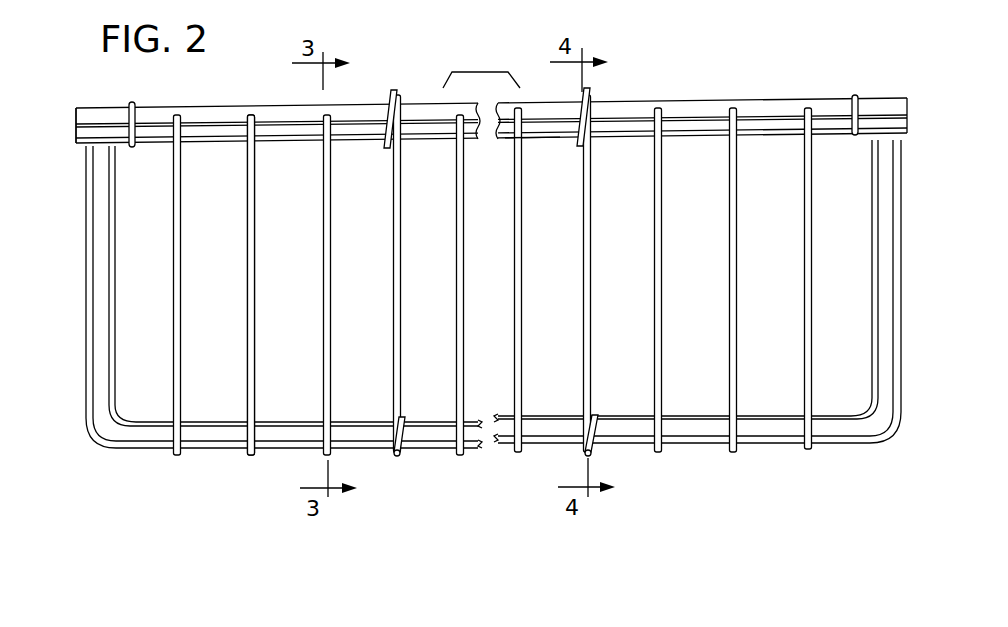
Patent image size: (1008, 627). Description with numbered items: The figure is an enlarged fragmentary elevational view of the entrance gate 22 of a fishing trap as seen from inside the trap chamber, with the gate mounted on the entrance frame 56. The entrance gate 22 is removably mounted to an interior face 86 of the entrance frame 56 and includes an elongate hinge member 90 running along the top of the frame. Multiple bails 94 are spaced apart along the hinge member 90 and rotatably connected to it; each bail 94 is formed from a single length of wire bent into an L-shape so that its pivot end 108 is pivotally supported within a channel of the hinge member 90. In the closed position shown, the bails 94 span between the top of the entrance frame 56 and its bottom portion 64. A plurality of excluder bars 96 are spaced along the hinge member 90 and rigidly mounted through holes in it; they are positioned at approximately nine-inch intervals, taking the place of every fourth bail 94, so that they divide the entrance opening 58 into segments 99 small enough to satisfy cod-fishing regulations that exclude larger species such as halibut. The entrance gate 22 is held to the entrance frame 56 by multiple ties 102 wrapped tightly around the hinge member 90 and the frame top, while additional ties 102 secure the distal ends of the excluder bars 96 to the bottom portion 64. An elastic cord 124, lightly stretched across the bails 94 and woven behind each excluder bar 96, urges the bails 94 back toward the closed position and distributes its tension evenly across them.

The entrance gate 22 is at (748, 95).
The entrance frame 56 is at (882, 178).
The entrance opening 58 is at (860, 384).
The bottom portion 64 is at (700, 434).
The interior face 86 is at (100, 217).
The hinge member 90 is at (112, 106).
The bails 94 is at (180, 258).
The excluder bars 96 is at (400, 258).
The segments 99 is at (395, 498).
The ties 102 is at (133, 103).
The pivot end 108 is at (253, 116).
The elastic cord 124 is at (531, 143).